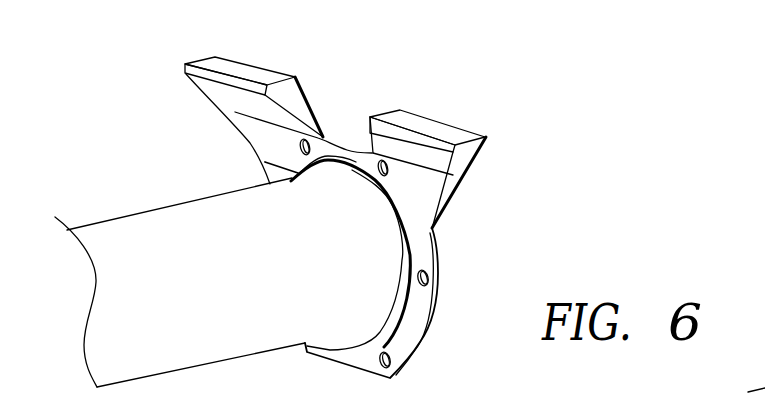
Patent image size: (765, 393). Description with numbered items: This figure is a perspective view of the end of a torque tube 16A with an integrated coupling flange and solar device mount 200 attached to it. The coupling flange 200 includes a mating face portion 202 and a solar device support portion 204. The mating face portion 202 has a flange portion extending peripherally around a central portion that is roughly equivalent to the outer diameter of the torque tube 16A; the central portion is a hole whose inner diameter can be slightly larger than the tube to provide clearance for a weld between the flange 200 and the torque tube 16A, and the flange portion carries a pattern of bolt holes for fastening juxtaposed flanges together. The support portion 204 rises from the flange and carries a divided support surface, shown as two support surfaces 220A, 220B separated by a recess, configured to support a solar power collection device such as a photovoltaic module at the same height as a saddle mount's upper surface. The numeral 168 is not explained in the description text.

The torque tube 16A is at (228, 366).
The collar hub 168 is at (288, 175).
The integrated coupling flange and solar device mount 200 is at (105, 110).
The mating face portion 202 is at (452, 257).
The solar device support portion 204 is at (541, 124).
The support surface 220A is at (427, 114).
The support surface 220B is at (260, 68).